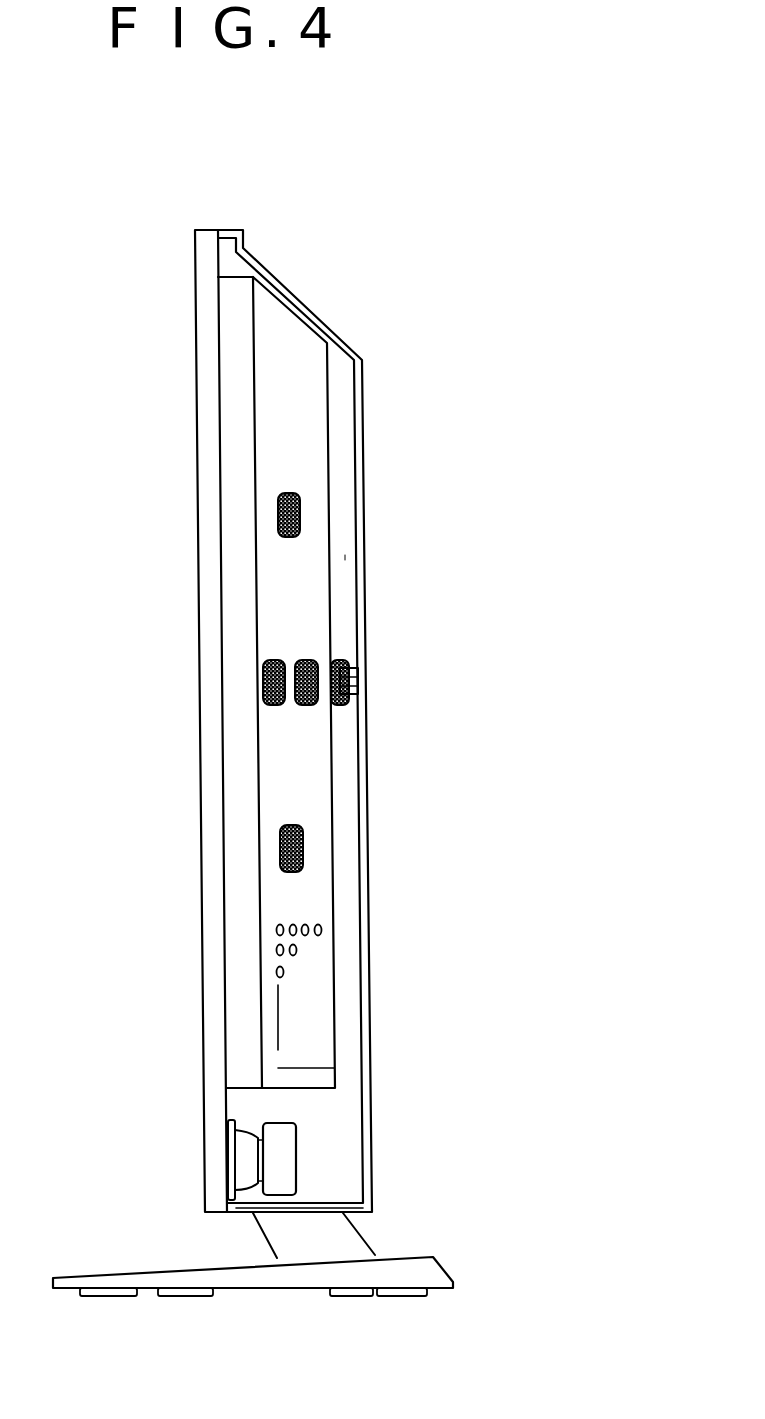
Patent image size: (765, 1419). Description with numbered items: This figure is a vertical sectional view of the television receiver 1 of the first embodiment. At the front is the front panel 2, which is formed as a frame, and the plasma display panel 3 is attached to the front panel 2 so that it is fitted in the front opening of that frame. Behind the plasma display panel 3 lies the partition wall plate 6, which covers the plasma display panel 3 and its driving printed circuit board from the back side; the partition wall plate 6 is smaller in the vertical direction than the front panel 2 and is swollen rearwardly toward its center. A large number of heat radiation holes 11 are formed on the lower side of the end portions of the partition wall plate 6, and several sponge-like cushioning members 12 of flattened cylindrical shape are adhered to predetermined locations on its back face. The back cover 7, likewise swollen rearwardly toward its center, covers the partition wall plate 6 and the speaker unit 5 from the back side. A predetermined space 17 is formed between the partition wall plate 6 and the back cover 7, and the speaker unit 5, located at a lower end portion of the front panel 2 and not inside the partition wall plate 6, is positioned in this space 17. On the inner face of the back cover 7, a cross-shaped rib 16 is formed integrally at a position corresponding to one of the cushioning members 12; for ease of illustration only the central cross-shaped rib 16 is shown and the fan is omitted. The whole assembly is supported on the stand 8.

The television receiver 1 is at (338, 238).
The front panel 2 is at (197, 510).
The plasma display panel 3 is at (233, 380).
The speaker unit 5 is at (283, 1155).
The partition wall plate 6 is at (310, 407).
The back cover 7 is at (345, 338).
The stand 8 is at (118, 1272).
The heat radiation holes 11 is at (297, 951).
The cushioning member 12 is at (300, 503).
The cross-shaped rib 16 is at (350, 665).
The space 17 is at (343, 557).